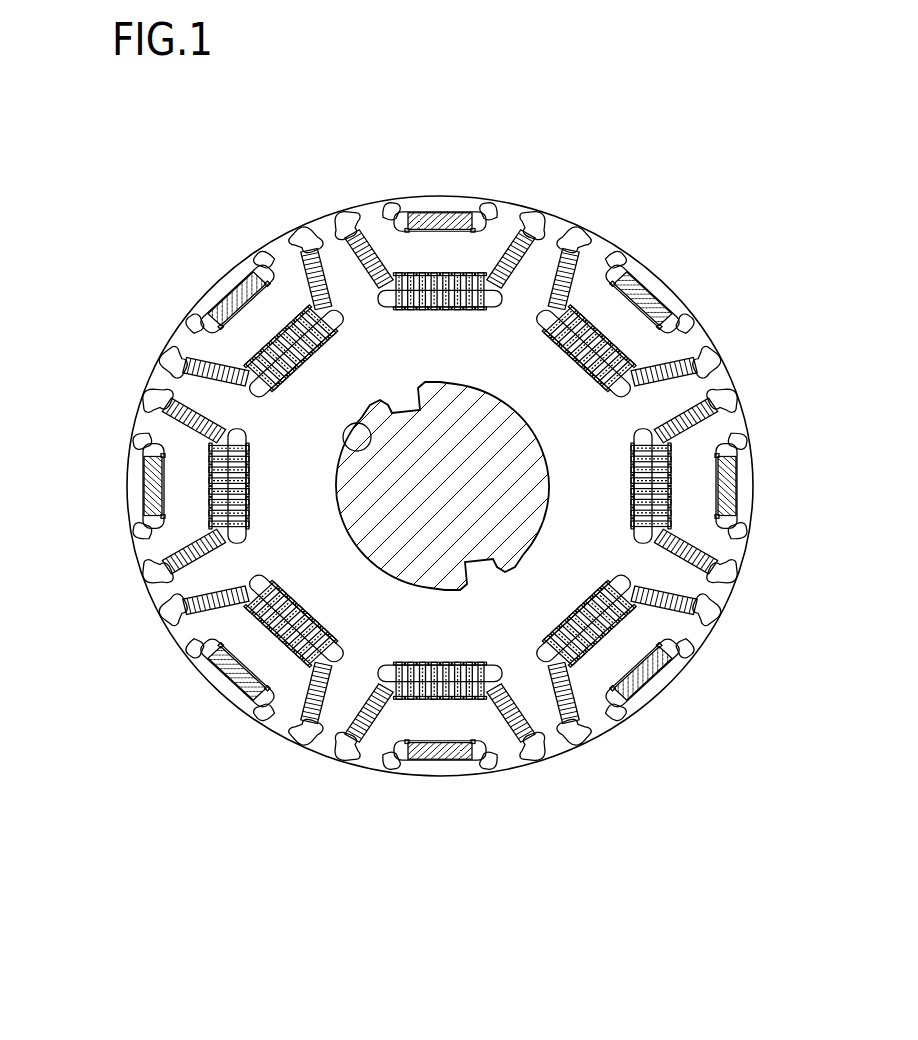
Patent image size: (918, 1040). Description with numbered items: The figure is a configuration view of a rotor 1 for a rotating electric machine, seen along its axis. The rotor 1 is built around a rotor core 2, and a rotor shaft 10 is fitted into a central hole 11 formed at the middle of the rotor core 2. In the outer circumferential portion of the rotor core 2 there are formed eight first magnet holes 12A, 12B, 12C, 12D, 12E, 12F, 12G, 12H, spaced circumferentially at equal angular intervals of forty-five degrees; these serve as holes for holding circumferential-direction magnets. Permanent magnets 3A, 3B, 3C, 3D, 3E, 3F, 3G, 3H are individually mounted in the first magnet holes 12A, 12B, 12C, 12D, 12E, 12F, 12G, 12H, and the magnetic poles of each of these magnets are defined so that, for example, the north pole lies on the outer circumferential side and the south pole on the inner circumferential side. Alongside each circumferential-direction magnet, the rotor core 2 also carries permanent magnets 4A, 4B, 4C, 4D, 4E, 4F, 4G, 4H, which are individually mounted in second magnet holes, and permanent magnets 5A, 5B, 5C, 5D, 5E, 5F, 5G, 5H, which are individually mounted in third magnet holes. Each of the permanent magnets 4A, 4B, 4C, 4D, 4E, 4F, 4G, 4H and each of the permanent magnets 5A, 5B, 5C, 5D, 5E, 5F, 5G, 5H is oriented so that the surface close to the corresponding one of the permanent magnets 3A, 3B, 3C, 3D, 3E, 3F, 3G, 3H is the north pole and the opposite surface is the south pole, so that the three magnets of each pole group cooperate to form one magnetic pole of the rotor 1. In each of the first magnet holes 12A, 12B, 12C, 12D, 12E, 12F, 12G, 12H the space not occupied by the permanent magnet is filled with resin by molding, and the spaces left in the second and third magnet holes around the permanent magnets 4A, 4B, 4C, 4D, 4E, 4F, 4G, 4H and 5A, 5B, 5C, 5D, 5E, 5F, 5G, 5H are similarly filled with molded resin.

The rotor 1 is at (581, 189).
The rotor core 2 is at (736, 383).
The rotor shaft 10 is at (420, 512).
The central hole 11 is at (343, 450).
The permanent magnet 3A is at (447, 212).
The permanent magnet 3B is at (652, 292).
The permanent magnet 3C is at (738, 486).
The permanent magnet 3D is at (647, 678).
The permanent magnet 3E is at (441, 757).
The permanent magnet 3F is at (236, 678).
The permanent magnet 3G is at (149, 486).
The permanent magnet 3H is at (238, 291).
The permanent magnet 4A is at (380, 233).
The permanent magnet 4B is at (590, 268).
The permanent magnet 4C is at (700, 418).
The permanent magnet 4D is at (668, 606).
The permanent magnet 4E is at (512, 720).
The permanent magnet 4F is at (316, 698).
The permanent magnet 4G is at (190, 552).
The permanent magnet 4H is at (178, 338).
The permanent magnet 5A is at (496, 240).
The permanent magnet 5B is at (675, 365).
The permanent magnet 5C is at (700, 552).
The permanent magnet 5D is at (568, 698).
The permanent magnet 5E is at (370, 720).
The permanent magnet 5F is at (214, 606).
The permanent magnet 5G is at (190, 424).
The permanent magnet 5H is at (300, 262).
The first magnet hole 12A is at (394, 205).
The first magnet hole 12B is at (628, 270).
The first magnet hole 12C is at (745, 446).
The first magnet hole 12D is at (690, 655).
The first magnet hole 12E is at (488, 768).
The first magnet hole 12F is at (261, 716).
The first magnet hole 12G is at (140, 530).
The first magnet hole 12H is at (192, 312).